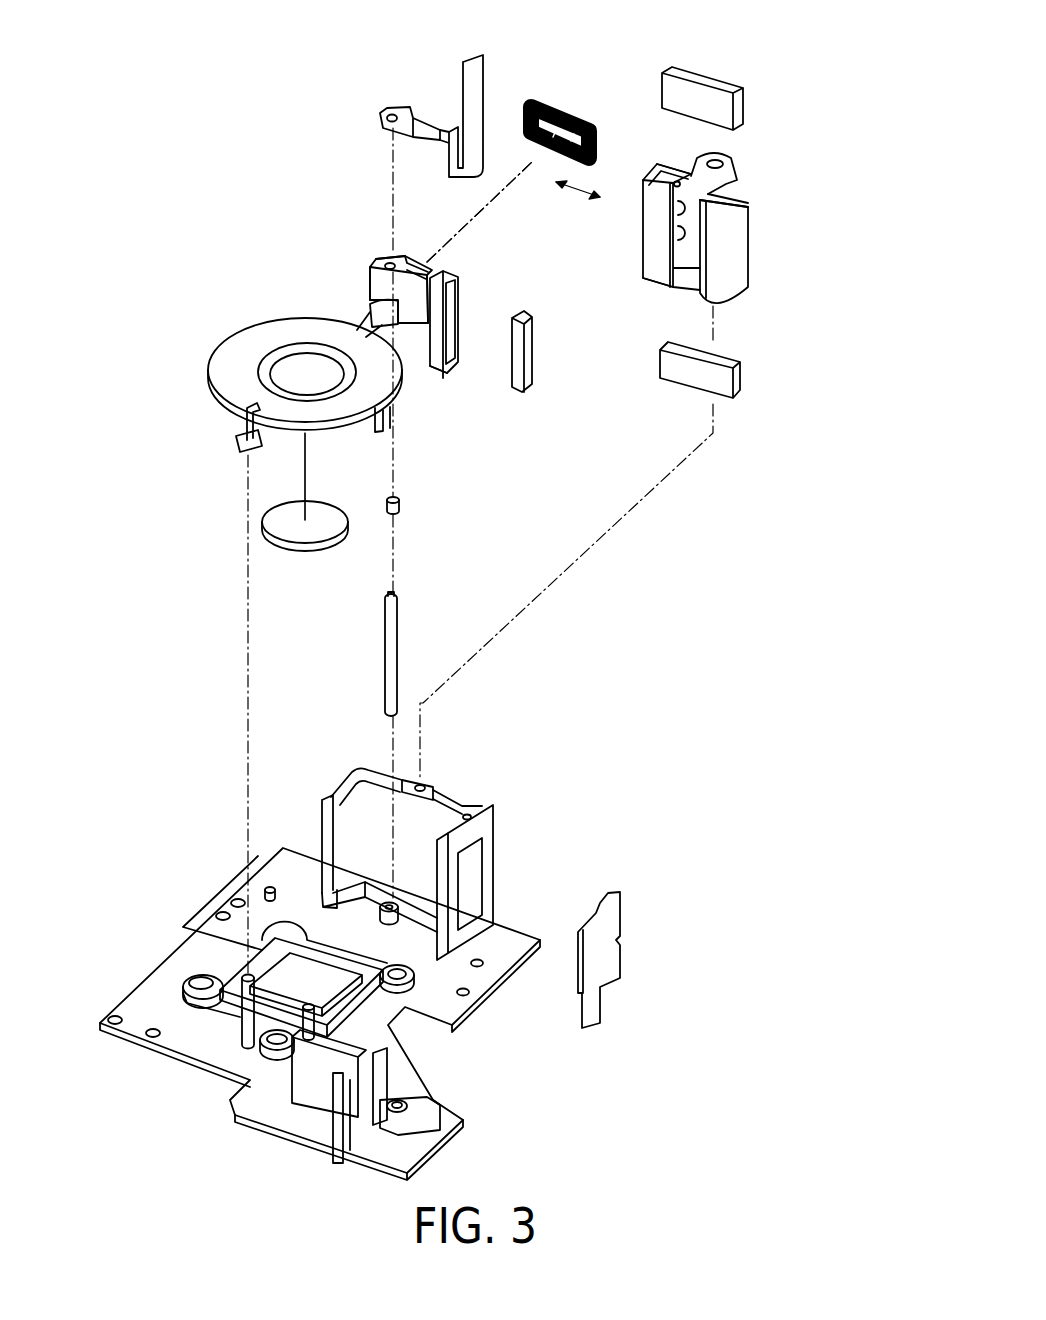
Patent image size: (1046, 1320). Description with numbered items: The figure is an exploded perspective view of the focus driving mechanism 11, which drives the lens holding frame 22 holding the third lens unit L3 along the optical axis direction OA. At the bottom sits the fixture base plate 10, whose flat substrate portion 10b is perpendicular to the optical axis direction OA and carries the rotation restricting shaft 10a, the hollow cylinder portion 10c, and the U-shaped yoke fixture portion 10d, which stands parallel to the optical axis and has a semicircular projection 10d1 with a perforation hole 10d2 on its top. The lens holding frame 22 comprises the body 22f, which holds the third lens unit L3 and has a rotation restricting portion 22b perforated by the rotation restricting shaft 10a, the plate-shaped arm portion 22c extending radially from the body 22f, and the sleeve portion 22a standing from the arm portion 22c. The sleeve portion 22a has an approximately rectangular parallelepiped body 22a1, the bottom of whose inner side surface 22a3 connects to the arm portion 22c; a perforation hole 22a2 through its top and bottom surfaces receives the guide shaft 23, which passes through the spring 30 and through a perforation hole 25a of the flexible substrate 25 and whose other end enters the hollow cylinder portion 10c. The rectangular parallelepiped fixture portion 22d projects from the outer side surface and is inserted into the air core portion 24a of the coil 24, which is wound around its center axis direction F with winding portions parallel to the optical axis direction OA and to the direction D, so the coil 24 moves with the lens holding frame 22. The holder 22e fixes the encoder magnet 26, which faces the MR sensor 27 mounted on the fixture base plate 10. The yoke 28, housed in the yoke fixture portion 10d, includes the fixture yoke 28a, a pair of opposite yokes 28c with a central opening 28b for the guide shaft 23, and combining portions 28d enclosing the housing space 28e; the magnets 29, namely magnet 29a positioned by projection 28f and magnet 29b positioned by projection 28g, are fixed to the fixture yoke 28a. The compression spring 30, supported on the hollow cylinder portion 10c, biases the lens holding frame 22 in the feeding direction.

The focus driving mechanism 11 is at (200, 212).
The fixture base plate 10 is at (182, 930).
The rotation restricting shaft 10a is at (247, 1000).
The substrate portion 10b is at (503, 963).
The hollow cylinder portion 10c is at (396, 900).
The yoke fixture portion 10d is at (483, 808).
The projection 10d1 is at (413, 781).
The perforation hole 10d2 is at (428, 786).
The lens holding frame 22 is at (278, 336).
The sleeve portion 22a is at (415, 324).
The body 22a1 is at (380, 292).
The perforation hole 22a2 is at (384, 262).
The inner side surface 22a3 is at (430, 284).
The rotation restricting portion 22b is at (236, 433).
The arm portion 22c is at (372, 318).
The fixture portion 22d is at (428, 258).
The holder 22e is at (447, 373).
The body 22f is at (224, 378).
The guide shaft 23 is at (397, 650).
The coil 24 is at (555, 98).
The air core portion 24a is at (556, 164).
The flexible substrate 25 is at (385, 113).
The perforation hole 25a is at (393, 112).
The encoder magnet 26 is at (533, 367).
The MR sensor 27 is at (627, 943).
The yoke 28 is at (730, 155).
The fixture yoke 28a is at (664, 161).
The opening 28b is at (735, 300).
The opposite yokes 28c is at (657, 268).
The combining portions 28d is at (748, 206).
The housing space 28e is at (722, 192).
The projection 28f is at (687, 233).
The projection 28g is at (687, 210).
The magnets 29 is at (770, 254).
The magnet 29a is at (735, 398).
The magnet 29b is at (703, 84).
The spring 30 is at (400, 505).
The third lens unit L3 is at (264, 526).
The optical axis direction OA is at (309, 463).
The center axis direction F is at (458, 216).
The direction D is at (578, 203).